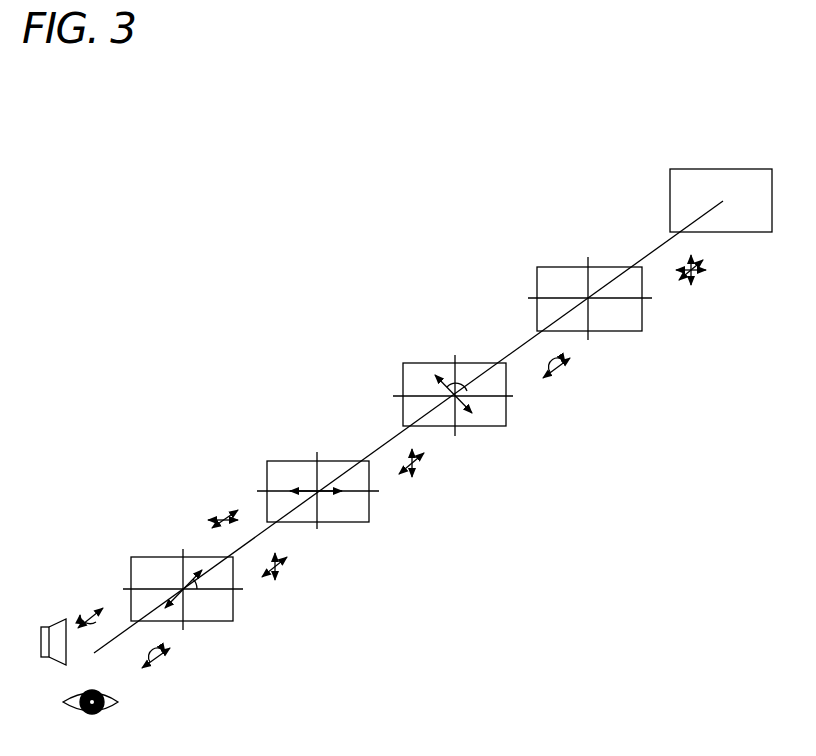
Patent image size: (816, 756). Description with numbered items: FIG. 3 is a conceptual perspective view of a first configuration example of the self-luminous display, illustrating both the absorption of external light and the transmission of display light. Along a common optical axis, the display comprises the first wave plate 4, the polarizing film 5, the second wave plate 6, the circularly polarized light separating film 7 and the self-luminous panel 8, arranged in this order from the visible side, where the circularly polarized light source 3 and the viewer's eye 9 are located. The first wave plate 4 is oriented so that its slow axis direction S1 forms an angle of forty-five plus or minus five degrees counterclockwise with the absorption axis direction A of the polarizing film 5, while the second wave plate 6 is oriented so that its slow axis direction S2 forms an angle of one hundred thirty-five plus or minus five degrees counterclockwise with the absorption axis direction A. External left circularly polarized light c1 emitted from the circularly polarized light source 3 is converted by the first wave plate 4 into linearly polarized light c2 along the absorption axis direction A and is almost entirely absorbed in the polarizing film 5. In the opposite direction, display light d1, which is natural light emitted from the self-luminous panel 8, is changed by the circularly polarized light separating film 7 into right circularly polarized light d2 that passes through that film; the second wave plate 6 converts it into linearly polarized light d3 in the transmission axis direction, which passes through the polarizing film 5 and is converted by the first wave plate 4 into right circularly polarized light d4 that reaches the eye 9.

The circularly polarized light source 3 is at (58, 664).
The first wave plate 4 is at (142, 566).
The polarizing film 5 is at (285, 475).
The second wave plate 6 is at (420, 372).
The circularly polarized light separating film 7 is at (560, 275).
The self-luminous panel 8 is at (682, 180).
The eye 9 is at (105, 708).
The absorption axis direction A is at (330, 493).
The slow axis direction S1 is at (195, 577).
The slow axis direction S2 is at (450, 388).
The left circularly polarized light c1 is at (97, 602).
The linearly polarized light c2 is at (222, 514).
The display light d1 is at (693, 283).
The right circularly polarized light d2 is at (568, 367).
The linearly polarized light d3 is at (288, 562).
The right circularly polarized light d4 is at (167, 656).